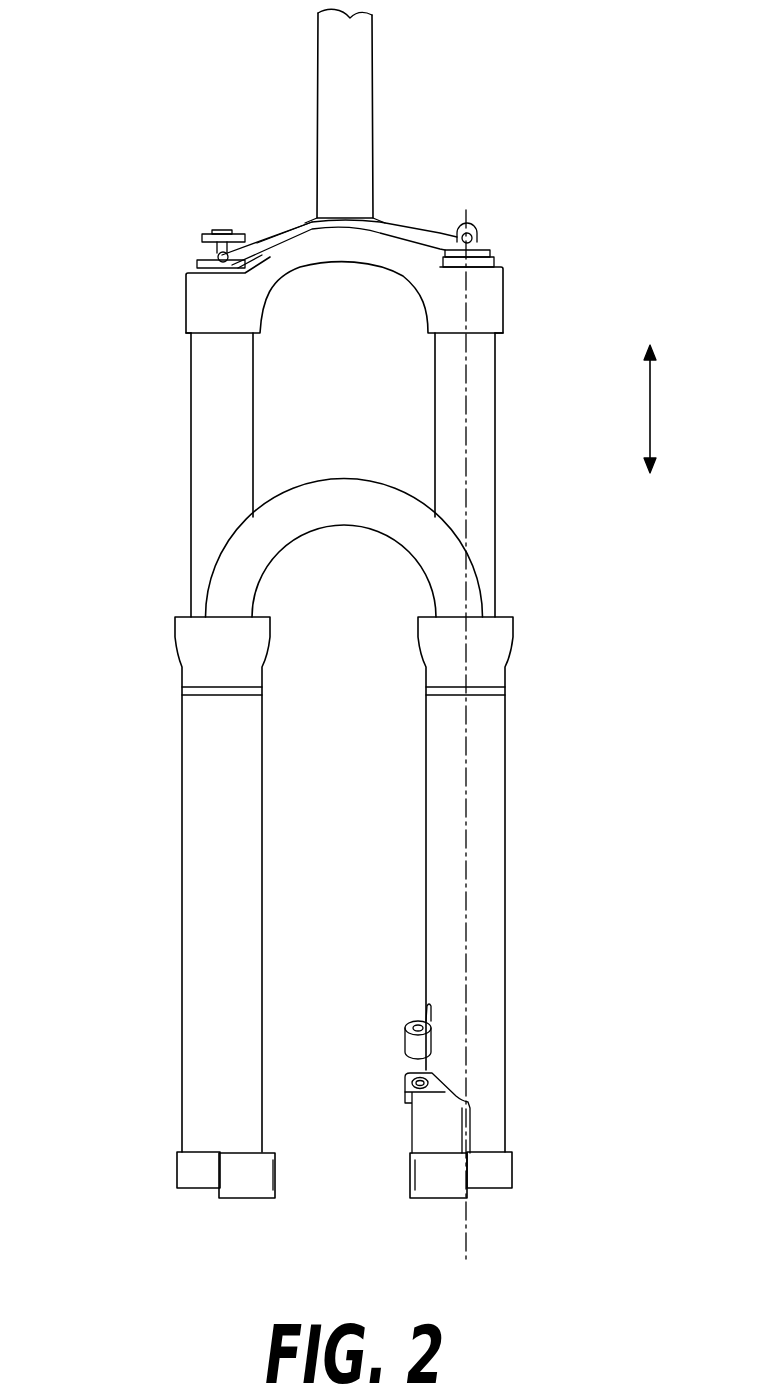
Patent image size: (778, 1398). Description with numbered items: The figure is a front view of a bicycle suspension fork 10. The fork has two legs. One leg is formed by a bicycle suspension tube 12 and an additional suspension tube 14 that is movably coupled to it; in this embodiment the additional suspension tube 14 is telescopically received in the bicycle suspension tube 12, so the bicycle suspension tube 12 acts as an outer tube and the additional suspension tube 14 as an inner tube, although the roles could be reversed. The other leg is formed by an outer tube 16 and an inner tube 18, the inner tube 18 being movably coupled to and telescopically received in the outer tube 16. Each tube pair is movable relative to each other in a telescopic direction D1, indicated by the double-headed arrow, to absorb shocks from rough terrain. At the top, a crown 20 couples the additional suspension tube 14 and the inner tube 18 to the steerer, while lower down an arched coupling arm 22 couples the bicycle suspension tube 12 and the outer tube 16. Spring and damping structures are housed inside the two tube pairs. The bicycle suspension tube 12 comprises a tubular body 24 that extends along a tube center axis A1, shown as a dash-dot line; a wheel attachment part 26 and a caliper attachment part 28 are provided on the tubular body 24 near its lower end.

The bicycle suspension fork 10 is at (343, 638).
The bicycle suspension tube 12 is at (505, 822).
The additional suspension tube 14 is at (497, 378).
The outer tube 16 is at (182, 818).
The inner tube 18 is at (190, 366).
The crown 20 is at (355, 270).
The coupling arm 22 is at (330, 480).
The tubular body 24 is at (487, 998).
The wheel attachment part 26 is at (436, 1186).
The caliper attachment part 28 is at (392, 1047).
The tube center axis A1 is at (467, 1077).
The telescopic direction D1 is at (650, 413).